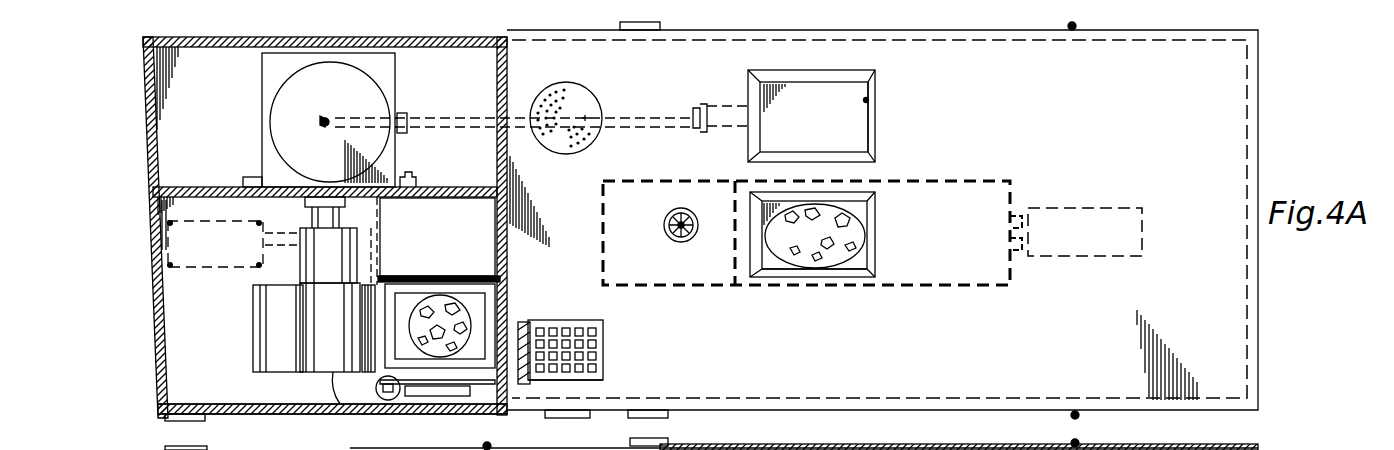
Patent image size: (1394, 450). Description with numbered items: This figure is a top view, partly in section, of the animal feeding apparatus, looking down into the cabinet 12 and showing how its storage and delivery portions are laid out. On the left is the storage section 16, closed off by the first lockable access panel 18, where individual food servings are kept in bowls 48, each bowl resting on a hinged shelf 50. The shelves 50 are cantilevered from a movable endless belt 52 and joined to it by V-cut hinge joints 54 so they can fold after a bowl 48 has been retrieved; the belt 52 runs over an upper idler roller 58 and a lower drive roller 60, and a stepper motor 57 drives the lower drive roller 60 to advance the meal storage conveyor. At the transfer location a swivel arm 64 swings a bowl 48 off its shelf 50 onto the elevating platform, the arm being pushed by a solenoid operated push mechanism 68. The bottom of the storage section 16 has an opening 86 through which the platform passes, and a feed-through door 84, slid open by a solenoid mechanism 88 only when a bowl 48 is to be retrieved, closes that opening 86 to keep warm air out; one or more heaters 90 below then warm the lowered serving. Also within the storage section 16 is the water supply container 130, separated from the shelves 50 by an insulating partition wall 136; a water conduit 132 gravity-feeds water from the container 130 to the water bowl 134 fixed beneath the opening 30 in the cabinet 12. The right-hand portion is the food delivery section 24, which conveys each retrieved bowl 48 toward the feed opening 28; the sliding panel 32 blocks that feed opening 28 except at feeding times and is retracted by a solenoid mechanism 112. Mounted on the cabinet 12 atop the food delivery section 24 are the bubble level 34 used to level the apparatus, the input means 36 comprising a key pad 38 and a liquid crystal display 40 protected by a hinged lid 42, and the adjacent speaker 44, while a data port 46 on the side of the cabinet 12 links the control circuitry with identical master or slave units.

The cabinet 12 is at (141, 80).
The storage section 16 is at (150, 355).
The first lockable access panel 18 is at (237, 414).
The food delivery section 24 is at (1262, 98).
The feed opening 28 is at (855, 277).
The opening 30 is at (868, 98).
The sliding panel 32 is at (947, 180).
The bubble level 34 is at (663, 225).
The input means 36 is at (609, 350).
The key pad 38 is at (600, 336).
The liquid crystal display 40 is at (547, 336).
The hinged lid 42 is at (534, 322).
The speaker 44 is at (580, 90).
The data port 46 is at (545, 418).
The bowl 48 is at (487, 275).
The hinged shelf 50 is at (509, 282).
The movable endless belt 52 is at (300, 318).
The V-cut hinge joint 54 is at (325, 336).
The stepper motor 57 is at (298, 250).
The upper idler roller 58 is at (316, 414).
The lower drive roller 60 is at (332, 422).
The swivel arm 64 is at (465, 411).
The solenoid operated push mechanism 68 is at (378, 374).
The feed-through door 84 is at (450, 249).
The opening 86 is at (428, 186).
The solenoid mechanism 88 is at (195, 268).
The heater 90 is at (450, 186).
The solenoid mechanism 112 is at (1085, 208).
The water supply container 130 is at (284, 97).
The water conduit 132 is at (656, 110).
The water bowl 134 is at (857, 129).
The insulating partition wall 136 is at (180, 187).